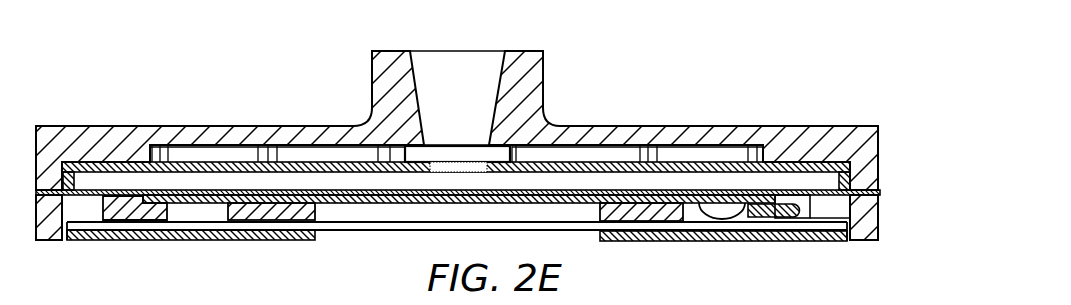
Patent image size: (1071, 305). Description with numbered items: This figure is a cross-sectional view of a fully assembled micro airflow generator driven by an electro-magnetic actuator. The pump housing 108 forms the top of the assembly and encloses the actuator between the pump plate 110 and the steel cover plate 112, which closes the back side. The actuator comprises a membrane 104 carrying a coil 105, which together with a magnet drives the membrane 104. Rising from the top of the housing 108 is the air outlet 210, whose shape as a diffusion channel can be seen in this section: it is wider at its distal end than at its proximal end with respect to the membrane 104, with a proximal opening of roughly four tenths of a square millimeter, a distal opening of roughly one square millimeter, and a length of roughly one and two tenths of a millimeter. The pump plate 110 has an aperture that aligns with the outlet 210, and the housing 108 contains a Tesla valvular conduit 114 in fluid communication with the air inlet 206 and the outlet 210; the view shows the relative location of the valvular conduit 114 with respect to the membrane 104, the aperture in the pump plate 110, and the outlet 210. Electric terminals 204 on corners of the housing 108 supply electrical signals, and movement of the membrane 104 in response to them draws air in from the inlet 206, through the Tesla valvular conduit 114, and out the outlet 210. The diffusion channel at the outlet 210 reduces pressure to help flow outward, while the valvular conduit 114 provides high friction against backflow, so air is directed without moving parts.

The pump housing 108 is at (862, 138).
The air outlet 210 is at (435, 67).
The electric terminals 204 is at (217, 153).
The Tesla valvular conduit 114 is at (330, 153).
The air inlet 206 is at (703, 150).
The pump plate 110 is at (857, 165).
The membrane 104 is at (880, 192).
The coil 105 is at (398, 206).
The cover plate 112 is at (700, 243).